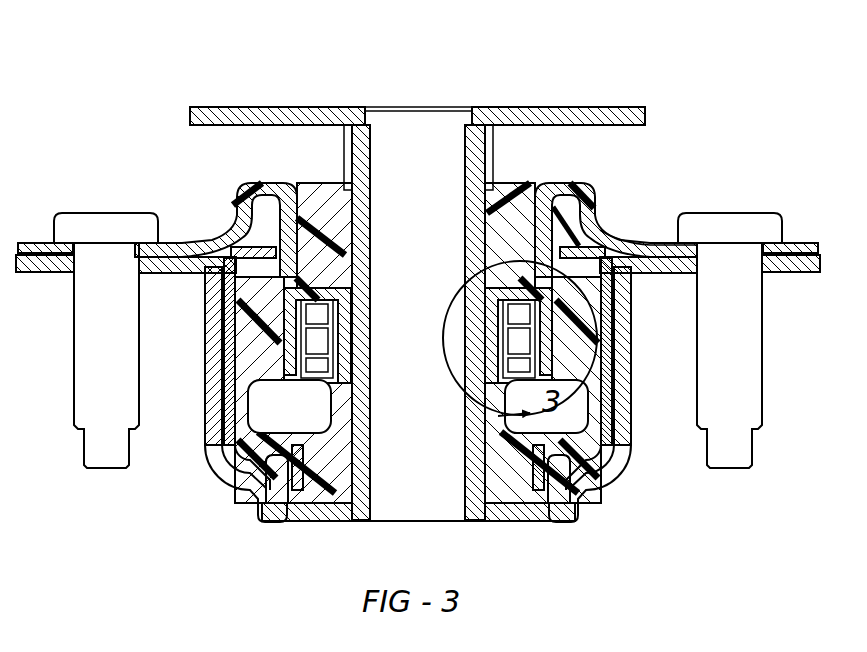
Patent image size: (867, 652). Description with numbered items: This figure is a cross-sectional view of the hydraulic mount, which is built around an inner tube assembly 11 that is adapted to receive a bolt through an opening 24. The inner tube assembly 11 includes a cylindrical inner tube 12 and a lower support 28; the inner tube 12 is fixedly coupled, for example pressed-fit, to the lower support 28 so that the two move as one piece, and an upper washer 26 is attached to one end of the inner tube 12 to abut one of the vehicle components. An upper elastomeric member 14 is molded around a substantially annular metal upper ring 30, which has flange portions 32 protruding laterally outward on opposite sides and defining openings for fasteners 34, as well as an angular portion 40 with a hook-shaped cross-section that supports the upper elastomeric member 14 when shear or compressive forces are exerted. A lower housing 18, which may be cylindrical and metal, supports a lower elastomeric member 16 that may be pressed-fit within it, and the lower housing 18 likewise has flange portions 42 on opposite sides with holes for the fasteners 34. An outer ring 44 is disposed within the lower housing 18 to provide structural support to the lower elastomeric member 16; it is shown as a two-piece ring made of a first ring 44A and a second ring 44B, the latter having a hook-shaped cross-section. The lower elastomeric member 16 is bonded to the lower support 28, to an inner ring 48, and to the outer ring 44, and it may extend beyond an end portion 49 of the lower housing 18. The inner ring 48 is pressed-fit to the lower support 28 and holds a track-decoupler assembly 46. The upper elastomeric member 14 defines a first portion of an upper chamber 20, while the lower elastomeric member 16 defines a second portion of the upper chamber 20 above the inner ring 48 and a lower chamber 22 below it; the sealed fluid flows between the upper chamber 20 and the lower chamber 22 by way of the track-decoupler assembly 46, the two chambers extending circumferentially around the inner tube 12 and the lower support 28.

The inner tube assembly 11 is at (457, 463).
The inner tube 12 is at (484, 150).
The upper elastomeric member 14 is at (588, 182).
The lower elastomeric member 16 is at (600, 290).
The lower housing 18 is at (210, 335).
The upper chamber 20 is at (262, 265).
The lower chamber 22 is at (280, 425).
The opening 24 is at (425, 124).
The upper washer 26 is at (576, 106).
The lower support 28 is at (350, 445).
The upper ring 30 is at (604, 226).
The flange portions 32 is at (46, 240).
The fasteners 34 is at (73, 395).
The angular portion 40 is at (310, 200).
The flange portions 42 is at (45, 280).
The outer ring 44 is at (228, 418).
The first ring 44A is at (610, 360).
The second ring 44B is at (614, 442).
The track-decoupler assembly 46 is at (573, 350).
The inner ring 48 is at (288, 380).
The end portion 49 is at (236, 495).